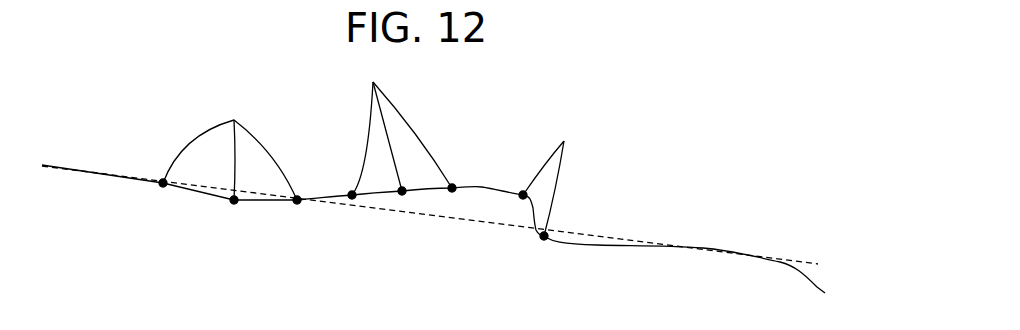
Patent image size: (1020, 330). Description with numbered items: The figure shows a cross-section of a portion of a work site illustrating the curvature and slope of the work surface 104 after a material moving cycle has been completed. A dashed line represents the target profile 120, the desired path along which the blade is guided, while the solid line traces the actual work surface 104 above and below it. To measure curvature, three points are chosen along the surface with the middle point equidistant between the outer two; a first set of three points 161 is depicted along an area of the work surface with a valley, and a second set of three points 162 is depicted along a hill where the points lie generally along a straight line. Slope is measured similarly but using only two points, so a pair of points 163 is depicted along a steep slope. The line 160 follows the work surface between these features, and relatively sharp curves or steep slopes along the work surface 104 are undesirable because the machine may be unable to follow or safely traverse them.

The work surface 104 is at (702, 247).
The target profile 120 is at (455, 222).
The surface profile line 160 is at (482, 187).
The first set of three points 161 is at (230, 150).
The second set of three points 162 is at (402, 128).
The pair of points 163 is at (554, 174).